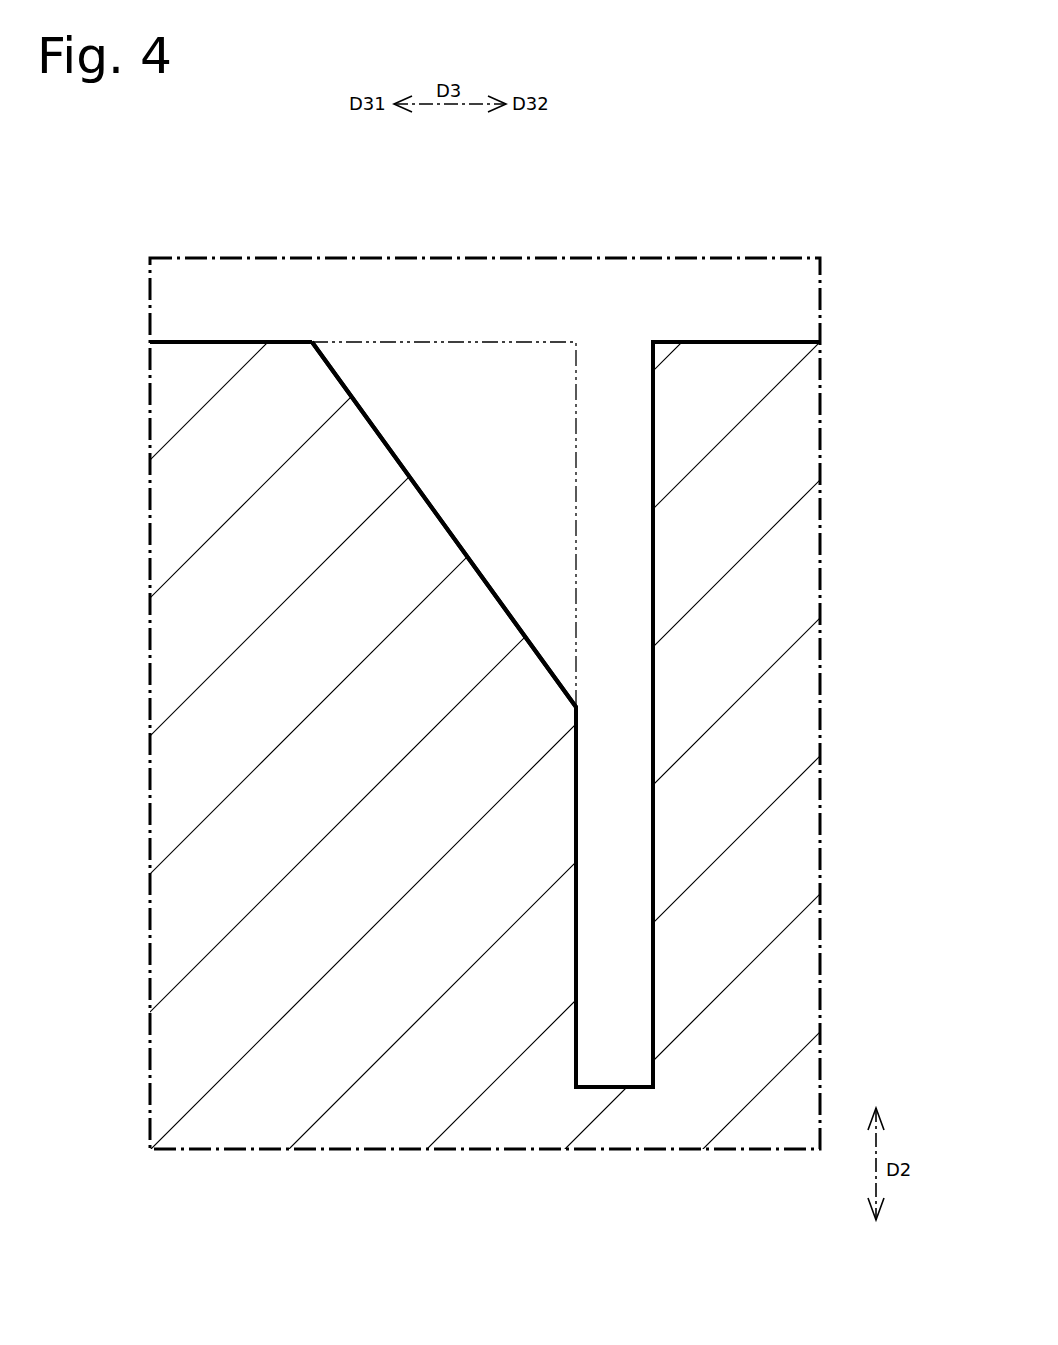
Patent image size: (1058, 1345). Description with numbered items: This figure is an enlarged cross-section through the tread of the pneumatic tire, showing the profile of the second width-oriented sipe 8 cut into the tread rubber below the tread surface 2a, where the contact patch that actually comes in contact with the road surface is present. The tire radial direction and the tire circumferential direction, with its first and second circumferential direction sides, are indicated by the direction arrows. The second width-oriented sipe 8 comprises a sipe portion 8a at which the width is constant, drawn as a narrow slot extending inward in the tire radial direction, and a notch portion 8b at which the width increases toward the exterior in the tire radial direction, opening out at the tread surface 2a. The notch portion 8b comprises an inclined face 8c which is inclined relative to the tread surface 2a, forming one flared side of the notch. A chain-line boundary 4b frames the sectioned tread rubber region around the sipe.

The tread surface 2a is at (165, 340).
The side surface of electrode 4b is at (787, 292).
The second width-oriented sipe 8 is at (537, 320).
The sipe portion 8a is at (575, 898).
The notch portion 8b is at (472, 370).
The inclined face 8c is at (440, 512).